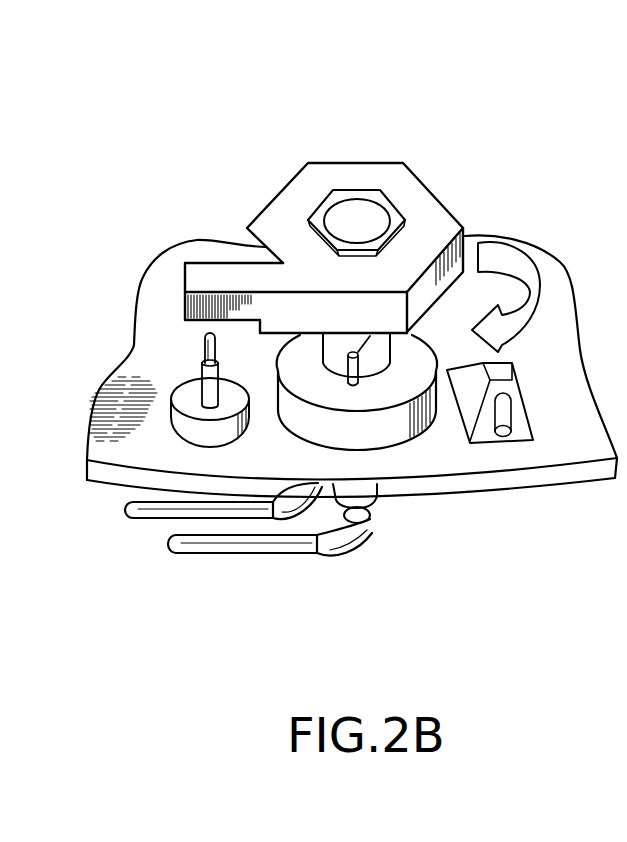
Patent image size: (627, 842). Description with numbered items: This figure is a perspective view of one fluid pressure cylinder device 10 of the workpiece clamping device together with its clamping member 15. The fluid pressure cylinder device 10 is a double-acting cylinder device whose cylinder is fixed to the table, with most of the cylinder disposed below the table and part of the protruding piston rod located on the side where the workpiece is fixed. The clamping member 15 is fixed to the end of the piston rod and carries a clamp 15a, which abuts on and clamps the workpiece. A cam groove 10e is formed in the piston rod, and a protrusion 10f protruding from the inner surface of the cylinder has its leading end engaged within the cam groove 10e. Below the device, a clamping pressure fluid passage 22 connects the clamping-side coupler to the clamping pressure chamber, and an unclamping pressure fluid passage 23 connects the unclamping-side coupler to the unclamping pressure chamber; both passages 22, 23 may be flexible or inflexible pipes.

The fluid pressure cylinder device 10 is at (418, 427).
The cam groove 10e is at (366, 335).
The protrusion 10f is at (352, 353).
The clamping member 15 is at (368, 177).
The clamp 15a is at (200, 278).
The clamping pressure fluid passage 22 is at (136, 519).
The unclamping pressure fluid passage 23 is at (230, 555).